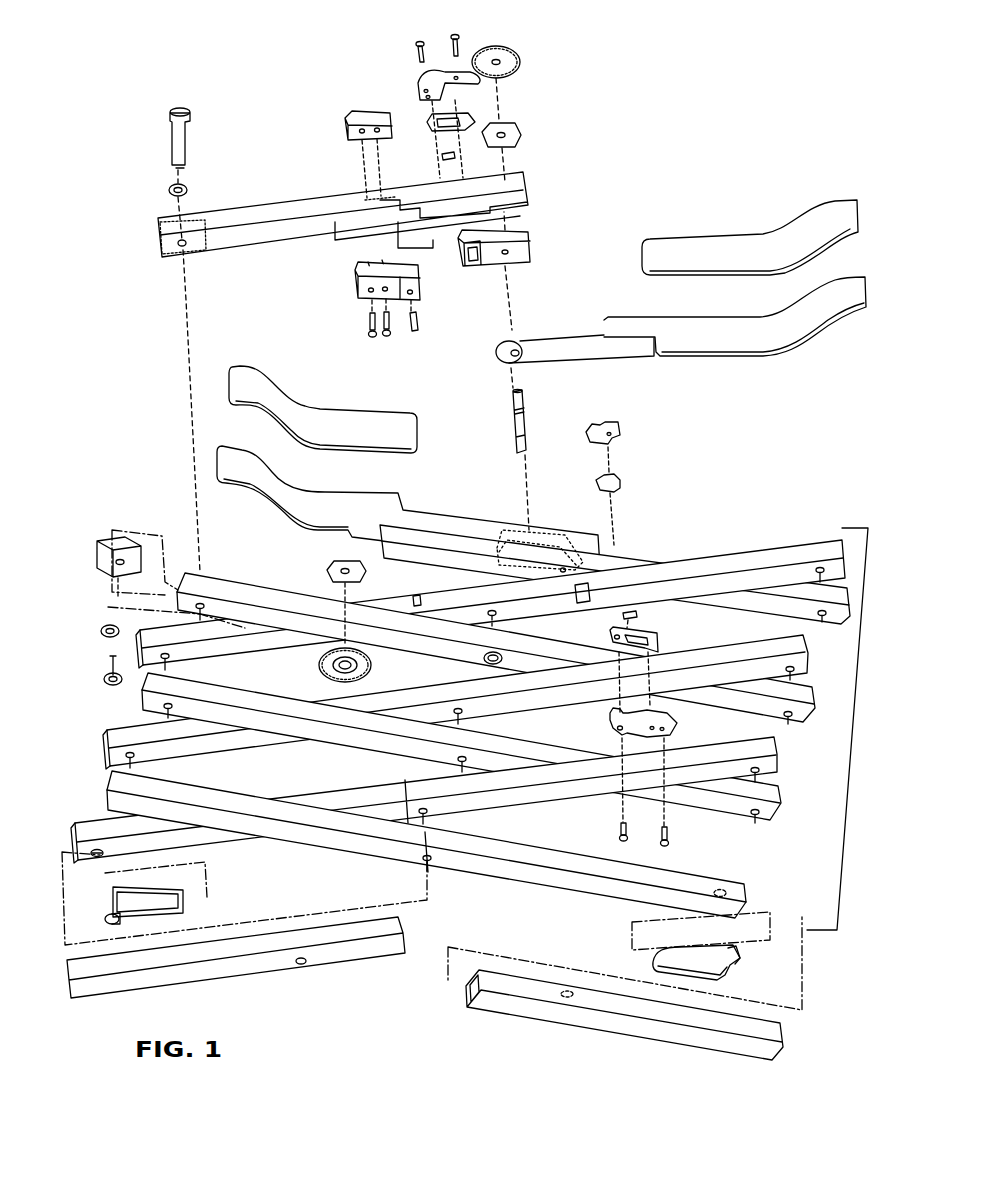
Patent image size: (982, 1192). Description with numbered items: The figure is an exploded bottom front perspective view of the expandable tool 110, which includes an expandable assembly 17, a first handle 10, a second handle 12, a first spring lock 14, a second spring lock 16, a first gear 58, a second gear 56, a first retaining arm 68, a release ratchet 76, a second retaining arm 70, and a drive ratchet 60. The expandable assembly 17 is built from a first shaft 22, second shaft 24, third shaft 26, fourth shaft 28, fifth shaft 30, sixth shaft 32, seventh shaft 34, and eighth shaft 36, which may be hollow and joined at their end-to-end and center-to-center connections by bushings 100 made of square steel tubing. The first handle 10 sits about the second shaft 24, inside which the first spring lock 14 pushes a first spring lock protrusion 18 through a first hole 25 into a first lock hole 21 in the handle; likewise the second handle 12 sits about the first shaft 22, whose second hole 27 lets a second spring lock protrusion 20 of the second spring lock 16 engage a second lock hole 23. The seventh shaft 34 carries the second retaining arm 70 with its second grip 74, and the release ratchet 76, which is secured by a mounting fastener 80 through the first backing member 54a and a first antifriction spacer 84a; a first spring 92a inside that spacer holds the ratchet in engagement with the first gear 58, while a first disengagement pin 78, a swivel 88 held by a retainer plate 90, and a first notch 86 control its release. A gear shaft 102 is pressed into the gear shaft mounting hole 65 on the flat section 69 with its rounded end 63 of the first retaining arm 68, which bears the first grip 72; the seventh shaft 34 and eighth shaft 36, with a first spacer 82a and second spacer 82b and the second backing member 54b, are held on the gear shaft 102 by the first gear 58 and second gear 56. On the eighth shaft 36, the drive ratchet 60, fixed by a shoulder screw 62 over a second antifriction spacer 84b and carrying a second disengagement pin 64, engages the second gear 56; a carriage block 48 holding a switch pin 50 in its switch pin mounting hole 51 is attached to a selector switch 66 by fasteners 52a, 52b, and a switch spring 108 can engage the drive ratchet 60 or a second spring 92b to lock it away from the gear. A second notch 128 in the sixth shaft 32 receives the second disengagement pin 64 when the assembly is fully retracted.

The tool 110 is at (193, 56).
The first handle 10 is at (225, 983).
The second handle 12 is at (502, 1015).
The first spring lock 14 is at (187, 906).
The second spring lock 16 is at (650, 958).
The expandable assembly 17 is at (850, 755).
The first spring lock protrusion 18 is at (108, 923).
The second spring lock protrusion 20 is at (735, 950).
The first lock hole 21 is at (305, 965).
The first shaft 22 is at (745, 890).
The second lock hole 23 is at (566, 1000).
The second shaft 24 is at (77, 840).
The first hole 25 is at (96, 848).
The third shaft 26 is at (783, 796).
The second hole 27 is at (722, 888).
The fourth shaft 28 is at (106, 738).
The fifth shaft 30 is at (810, 722).
The sixth shaft 32 is at (140, 641).
The seventh shaft 34 is at (846, 628).
The eighth shaft 36 is at (268, 208).
The carriage block 48 is at (355, 288).
The switch pin 50 is at (417, 330).
The switch pin mounting hole 51 is at (412, 294).
The fastener 52a is at (370, 338).
The fastener 52b is at (389, 340).
The first backing member 54a is at (578, 546).
The second backing member 54b is at (530, 240).
The second gear 56 is at (506, 47).
The first gear 58 is at (318, 666).
The drive ratchet 60 is at (440, 70).
The shoulder screw 62 is at (458, 35).
The rounded end 63 is at (500, 356).
The second disengagement pin 64 is at (416, 43).
The gear shaft mounting hole 65 is at (522, 356).
The selector switch 66 is at (345, 130).
The first retaining arm 68 is at (757, 358).
The flat section 69 is at (608, 352).
The second retaining arm 70 is at (263, 500).
The first grip 72 is at (770, 237).
The second grip 74 is at (305, 400).
The release ratchet 76 is at (610, 720).
The first disengagement pin 78 is at (670, 840).
The mounting fastener 80 is at (616, 832).
The first spacer 82a is at (325, 571).
The second spacer 82b is at (522, 135).
The first antifriction spacer 84a is at (610, 636).
The second antifriction spacer 84b is at (427, 123).
The first notch 86 is at (558, 571).
The swivel 88 is at (622, 482).
The retainer plate 90 is at (622, 430).
The first spring 92a is at (640, 614).
The second spring 92b is at (442, 159).
The bushing 100 is at (100, 540).
The gear shaft 102 is at (513, 428).
The switch spring 108 is at (433, 248).
The second notch 128 is at (415, 596).